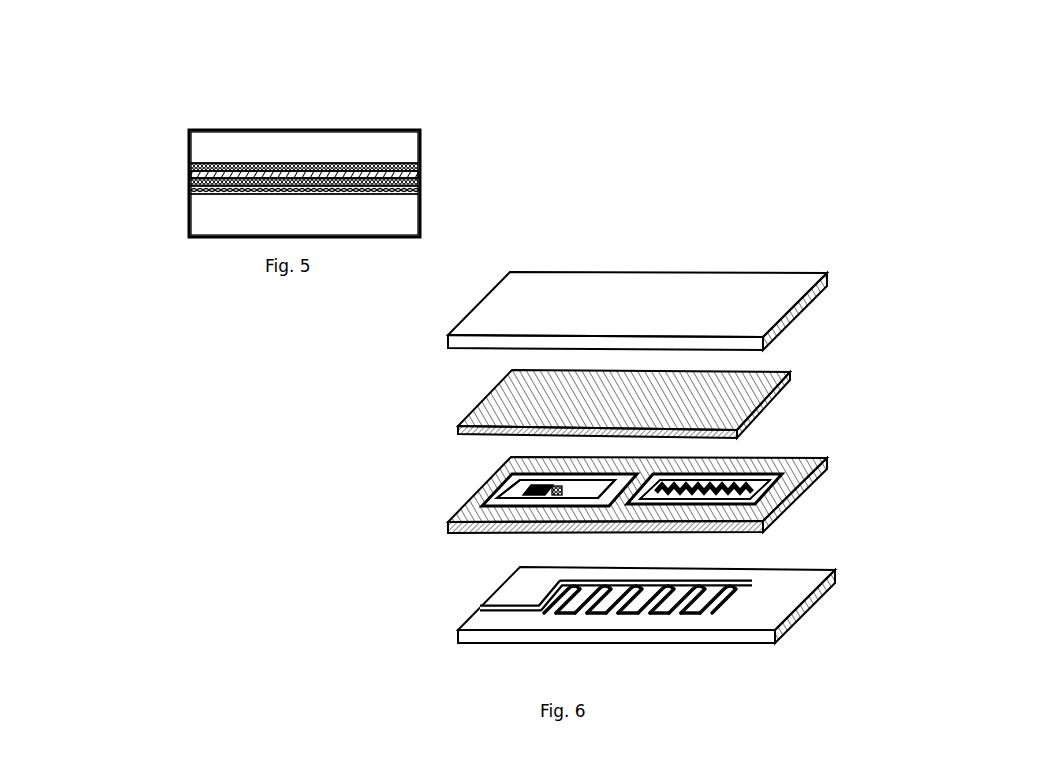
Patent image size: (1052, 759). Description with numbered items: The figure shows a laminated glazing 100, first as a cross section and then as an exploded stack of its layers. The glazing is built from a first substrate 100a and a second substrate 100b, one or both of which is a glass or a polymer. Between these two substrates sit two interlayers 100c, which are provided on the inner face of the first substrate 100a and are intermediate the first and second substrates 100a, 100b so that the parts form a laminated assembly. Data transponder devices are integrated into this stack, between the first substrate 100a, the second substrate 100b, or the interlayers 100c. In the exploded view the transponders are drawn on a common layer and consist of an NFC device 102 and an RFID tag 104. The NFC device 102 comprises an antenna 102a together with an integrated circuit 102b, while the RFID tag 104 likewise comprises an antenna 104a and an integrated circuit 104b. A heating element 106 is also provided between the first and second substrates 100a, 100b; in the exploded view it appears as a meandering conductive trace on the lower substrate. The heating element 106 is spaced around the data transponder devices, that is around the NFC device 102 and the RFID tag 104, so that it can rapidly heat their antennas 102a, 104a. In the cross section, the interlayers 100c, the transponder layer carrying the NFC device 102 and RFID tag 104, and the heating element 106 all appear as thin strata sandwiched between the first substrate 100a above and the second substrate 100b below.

In FIG. 5, the laminated glazing 100 is at (301, 108).
In FIG. 6, the laminated glazing 100 is at (722, 256).
In FIG. 5, the first substrate 100a is at (420, 153).
In FIG. 6, the first substrate 100a is at (823, 293).
In FIG. 5, the second substrate 100b is at (420, 226).
In FIG. 6, the second substrate 100b is at (840, 573).
In FIG. 5, the interlayer 100c is at (190, 167).
In FIG. 6, the interlayer 100c is at (487, 394).
In FIG. 5, the NFC device 102 is at (420, 177).
In FIG. 6, the NFC device 102 is at (590, 497).
In FIG. 6, the antenna 102a is at (494, 494).
In FIG. 6, the integrated circuit 102b is at (555, 487).
In FIG. 5, the RFID tag 104 is at (383, 160).
In FIG. 6, the RFID tag 104 is at (725, 497).
In FIG. 6, the antenna 104a is at (797, 455).
In FIG. 6, the integrated circuit 104b is at (760, 483).
In FIG. 5, the heating element 106 is at (190, 196).
In FIG. 6, the heating element 106 is at (487, 604).